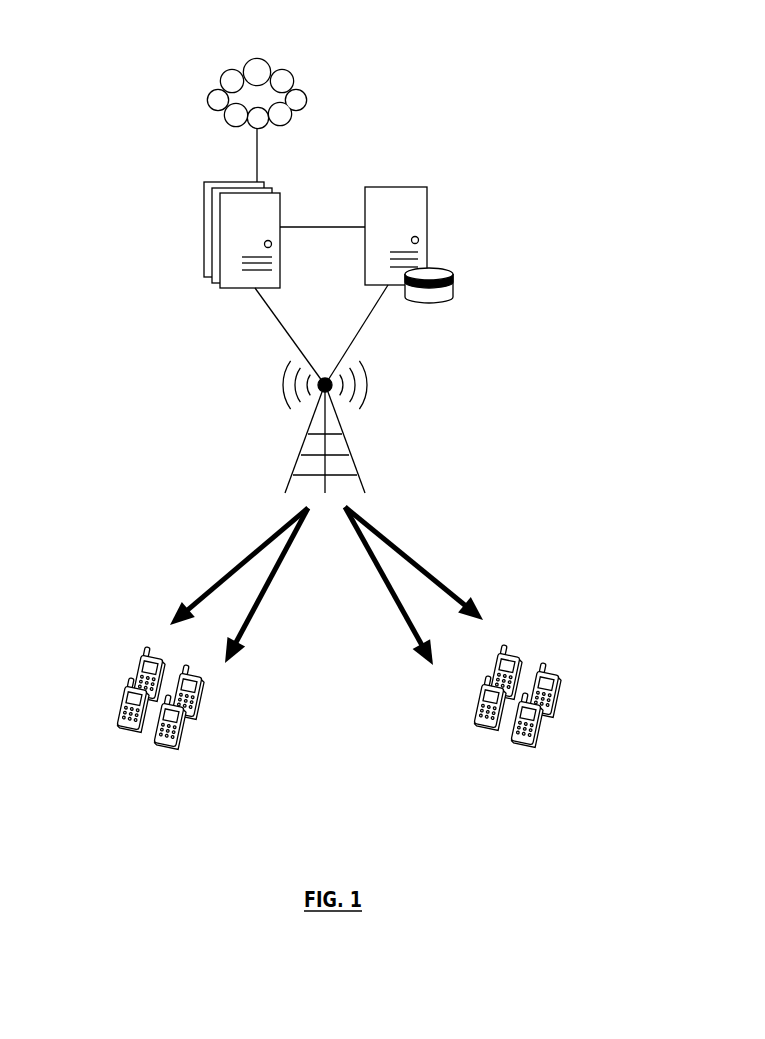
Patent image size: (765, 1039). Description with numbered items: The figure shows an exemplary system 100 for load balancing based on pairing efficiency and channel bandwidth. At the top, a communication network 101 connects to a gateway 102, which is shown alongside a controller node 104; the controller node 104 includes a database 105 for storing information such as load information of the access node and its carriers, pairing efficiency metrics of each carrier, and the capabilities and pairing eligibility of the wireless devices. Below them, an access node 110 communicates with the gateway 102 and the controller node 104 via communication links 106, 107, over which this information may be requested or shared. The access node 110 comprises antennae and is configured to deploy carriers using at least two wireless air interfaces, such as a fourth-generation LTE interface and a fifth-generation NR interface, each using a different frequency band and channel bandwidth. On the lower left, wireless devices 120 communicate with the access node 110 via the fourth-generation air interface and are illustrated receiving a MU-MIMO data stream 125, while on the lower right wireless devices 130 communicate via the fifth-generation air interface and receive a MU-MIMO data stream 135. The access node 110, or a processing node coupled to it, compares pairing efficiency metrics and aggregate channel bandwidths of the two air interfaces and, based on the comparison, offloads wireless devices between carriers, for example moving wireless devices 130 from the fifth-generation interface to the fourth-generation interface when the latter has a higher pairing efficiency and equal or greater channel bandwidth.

The system 100 is at (436, 44).
The communication network 101 is at (241, 107).
The gateway 102 is at (222, 182).
The controller node 104 is at (427, 187).
The database 105 is at (452, 270).
The communication link 106 is at (364, 322).
The communication link 107 is at (270, 310).
The access node 110 is at (302, 462).
The wireless devices 120 is at (120, 757).
The MU-MIMO data stream 125 is at (191, 553).
The wireless devices 130 is at (568, 756).
The MU-MIMO data stream 135 is at (446, 554).